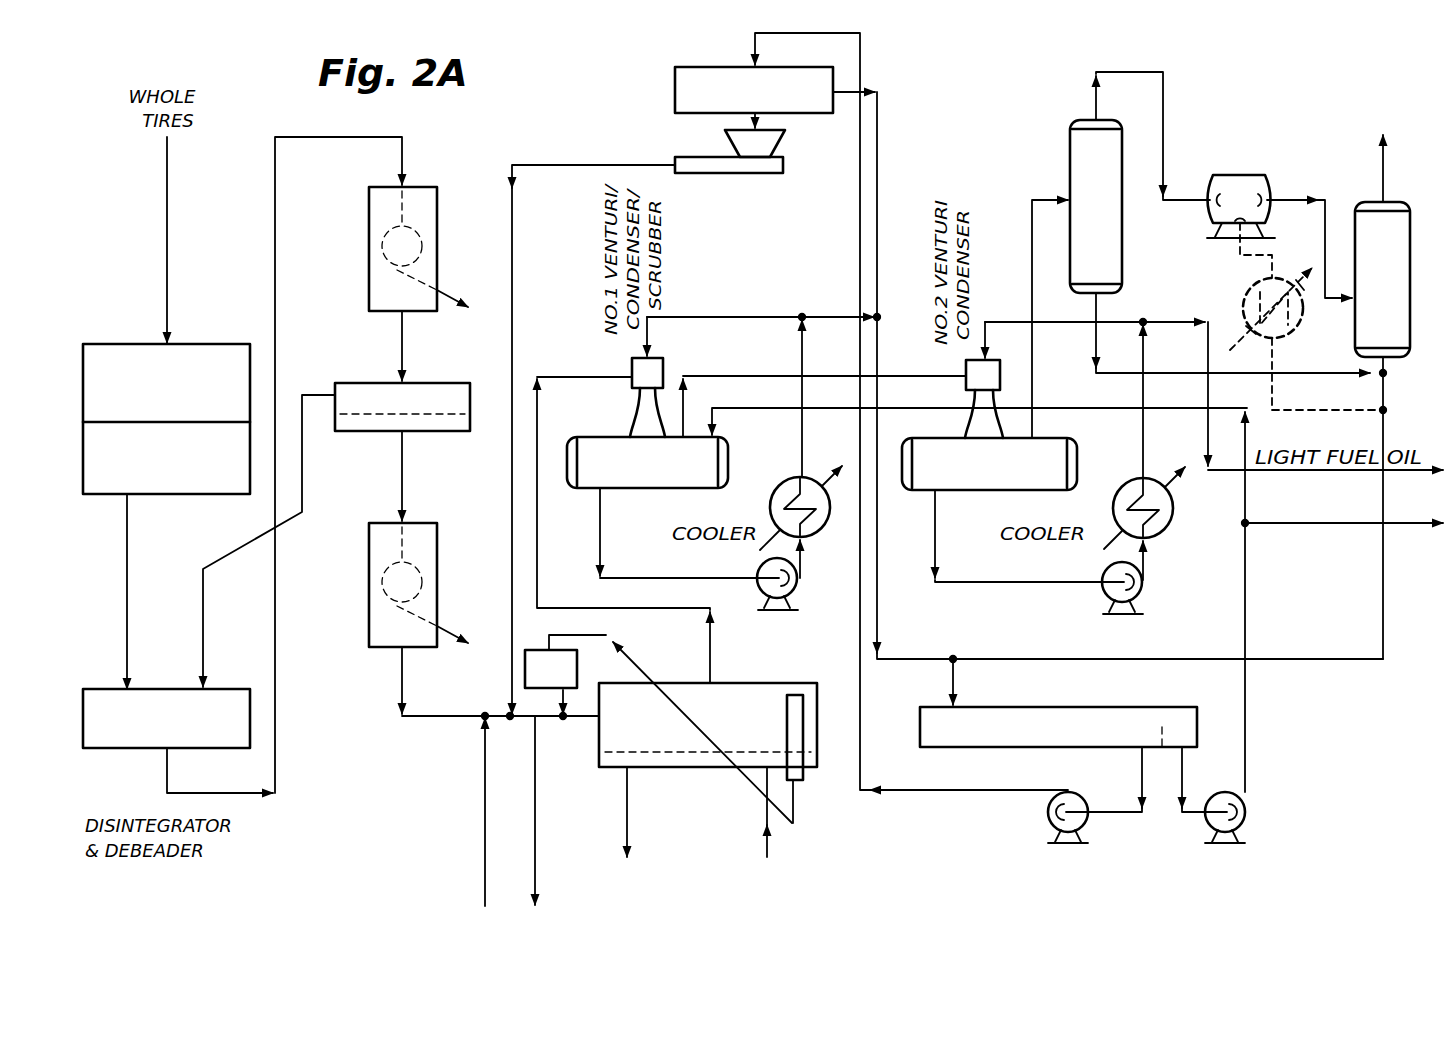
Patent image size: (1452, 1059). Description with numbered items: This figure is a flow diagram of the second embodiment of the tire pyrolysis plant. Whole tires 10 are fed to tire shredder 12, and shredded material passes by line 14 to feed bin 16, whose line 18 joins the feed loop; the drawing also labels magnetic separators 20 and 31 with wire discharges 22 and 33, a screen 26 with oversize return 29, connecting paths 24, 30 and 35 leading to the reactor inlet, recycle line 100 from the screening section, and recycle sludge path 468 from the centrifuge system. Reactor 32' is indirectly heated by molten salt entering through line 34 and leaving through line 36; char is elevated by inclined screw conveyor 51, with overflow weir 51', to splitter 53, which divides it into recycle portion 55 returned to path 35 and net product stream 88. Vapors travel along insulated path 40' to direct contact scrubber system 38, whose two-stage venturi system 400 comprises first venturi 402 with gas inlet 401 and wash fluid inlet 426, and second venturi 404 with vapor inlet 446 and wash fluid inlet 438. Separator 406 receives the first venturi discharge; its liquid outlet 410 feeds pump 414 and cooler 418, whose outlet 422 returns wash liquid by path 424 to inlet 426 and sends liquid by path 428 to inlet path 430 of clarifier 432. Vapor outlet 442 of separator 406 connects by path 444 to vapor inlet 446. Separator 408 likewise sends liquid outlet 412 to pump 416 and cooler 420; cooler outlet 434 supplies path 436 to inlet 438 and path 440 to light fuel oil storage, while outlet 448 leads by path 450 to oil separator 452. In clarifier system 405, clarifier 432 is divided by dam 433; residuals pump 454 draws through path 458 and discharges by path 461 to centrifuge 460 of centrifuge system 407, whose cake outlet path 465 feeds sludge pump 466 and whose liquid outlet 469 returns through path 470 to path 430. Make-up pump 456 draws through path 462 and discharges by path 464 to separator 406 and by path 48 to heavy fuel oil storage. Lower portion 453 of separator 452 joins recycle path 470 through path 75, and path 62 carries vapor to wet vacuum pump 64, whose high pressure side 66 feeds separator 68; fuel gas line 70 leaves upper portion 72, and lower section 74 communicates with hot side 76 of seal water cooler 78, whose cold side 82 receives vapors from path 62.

The whole tires 10 is at (167, 223).
The tire shredder 12 is at (120, 344).
The chopped tire line 14 is at (130, 523).
The feed bin 16 is at (183, 731).
The disintegrator output line 18 is at (191, 793).
The first magnetic separator 20 is at (437, 222).
The wire discharge 22 is at (444, 300).
The magnetic separator output line 24 is at (402, 356).
The single deck screen 26 is at (442, 383).
The oversize recycle line 29 is at (205, 617).
The screen undersize line 30 is at (402, 462).
The second magnetic separator 31 is at (437, 558).
The wire discharge 33 is at (444, 636).
The path at reactor inlet 35 is at (402, 680).
The recycle line 100 is at (485, 806).
The second stream of net product char 88 is at (537, 802).
The recycle sludge line 468 is at (514, 228).
The continuous centrifuge 460 is at (686, 74).
The centrifuge system 407 is at (728, 53).
The path from residuals pump to centrifuge 461 is at (862, 57).
The liquid discharge outlet of centrifuge 469 is at (834, 94).
The recycle path 470 is at (882, 88).
The inlet path of clarifier 430 is at (880, 124).
The path from centrifuge cake outlet 465 is at (772, 128).
The sludge pump 466 is at (690, 174).
The flow path to first venturi wash inlet 424 is at (714, 317).
The flow path to clarifier inlet path 428 is at (814, 317).
The wash fluid inlet of first venturi 426 is at (632, 370).
The gas inlet of first venturi 401 is at (632, 378).
The first stage venturi 402 is at (620, 420).
The vapor/liquid discharge separator of first venturi 406 is at (640, 488).
The path between separators and second venturi 444 is at (726, 377).
The vapor outlet of first separator 442 is at (721, 438).
The insulated path 40' is at (623, 530).
The liquid outlet of first separator 410 is at (599, 494).
The direct contact scrubber system 38 is at (660, 535).
The first pump 414 is at (797, 596).
The first cooler 418 is at (822, 552).
The outlet of first cooler 422 is at (802, 475).
The two-stage venturi system 400 is at (788, 626).
The pyrolysis reaction vessel 32' is at (708, 745).
The overflow weir 51' is at (815, 759).
The inclined screw conveyor 51 is at (722, 747).
The splitter 53 is at (565, 682).
The first portion of recycle char 55 is at (564, 695).
The molten salt return line 36 is at (632, 832).
The molten salt inlet line 34 is at (766, 843).
The flow path to second venturi wash inlet 436 is at (1066, 322).
The flow path to light fuel oil storage 440 is at (1172, 323).
The wash fluid inlet of second venturi 438 is at (966, 366).
The vapor inlet of second venturi 446 is at (964, 379).
The second stage venturi 404 is at (954, 428).
The vapor/liquid discharge separator of second venturi 408 is at (975, 490).
The outlet of second separator 448 is at (1040, 437).
The path to oil separator 450 is at (1029, 212).
The liquid outlet of second separator 412 is at (932, 494).
The second pump 416 is at (1152, 582).
The second cooler 420 is at (1173, 522).
The outlet of second cooler 434 is at (1136, 482).
The oil separator 452 is at (1070, 142).
The path to vacuum pump 62 is at (1131, 72).
The lower portion of oil separator 453 is at (1106, 292).
The wet vacuum pump 64 is at (1210, 219).
The high pressure side of vacuum pump 66 is at (1264, 197).
The cold side of seal water cooler 82 is at (1264, 279).
The seal water cooler 78 is at (1246, 301).
The hot side of seal water cooler 76 is at (1276, 342).
The path from oil separator to recycle path 75 is at (1314, 384).
The upper portion of separator 72 is at (1400, 204).
The fuel gas line 70 is at (1387, 163).
The separator or knock-out drum 68 is at (1414, 266).
The lower section of separator 74 is at (1389, 366).
The path from make-up pump to separator 464 is at (1249, 444).
The path to heavy fuel oil storage 48 is at (1426, 526).
The clarifier 432 is at (920, 712).
The dam 433 is at (1166, 727).
The residuals pump suction path 458 is at (1116, 814).
The make-up pump suction path 462 is at (1192, 816).
The residuals pump 454 is at (1068, 792).
The make-up pump 456 is at (1245, 822).
The clarifier system 405 is at (1000, 816).